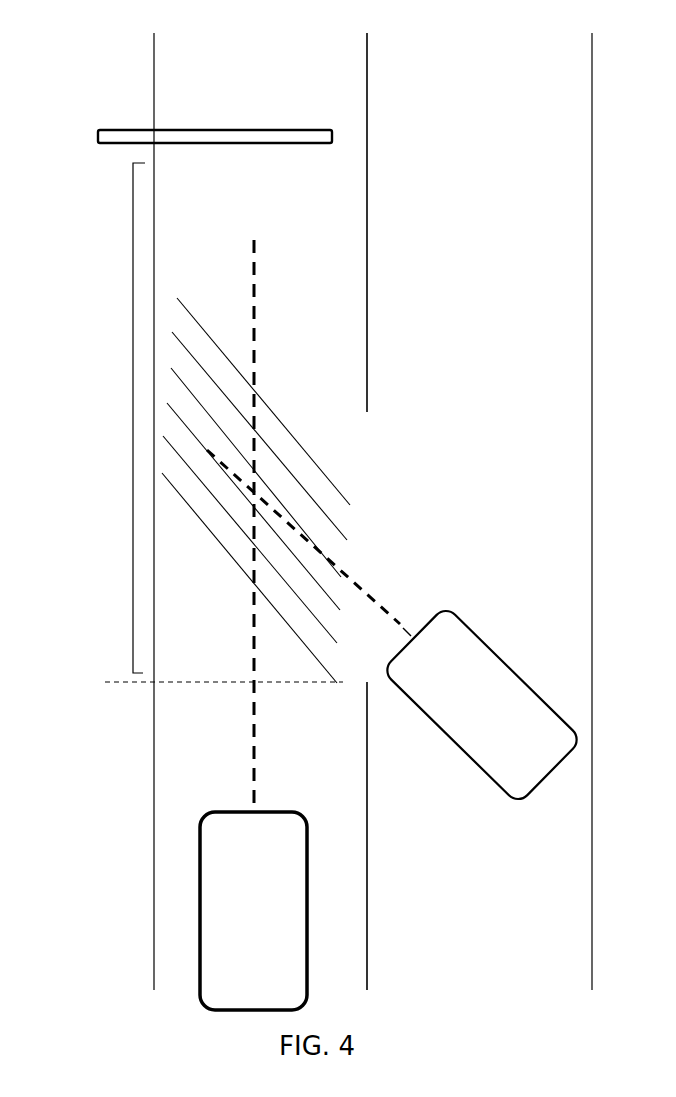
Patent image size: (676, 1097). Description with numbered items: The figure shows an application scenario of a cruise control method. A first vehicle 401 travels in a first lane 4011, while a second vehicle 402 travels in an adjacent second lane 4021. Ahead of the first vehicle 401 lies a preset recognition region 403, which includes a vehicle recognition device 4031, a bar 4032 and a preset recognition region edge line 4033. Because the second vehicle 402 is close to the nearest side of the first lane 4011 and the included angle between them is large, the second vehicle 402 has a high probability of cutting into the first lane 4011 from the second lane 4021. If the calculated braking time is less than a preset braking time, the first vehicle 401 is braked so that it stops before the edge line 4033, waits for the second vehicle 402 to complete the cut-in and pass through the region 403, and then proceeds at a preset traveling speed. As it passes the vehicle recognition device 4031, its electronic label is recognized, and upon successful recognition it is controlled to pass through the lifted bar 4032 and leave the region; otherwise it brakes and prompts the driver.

The first vehicle 401 is at (253, 625).
The second vehicle 402 is at (394, 627).
The preset recognition region 403 is at (133, 420).
The first lane 4011 is at (260, 501).
The second lane 4021 is at (514, 501).
The vehicle recognition device 4031 is at (97, 418).
The bar 4032 is at (176, 135).
The preset recognition region edge line 4033 is at (186, 682).